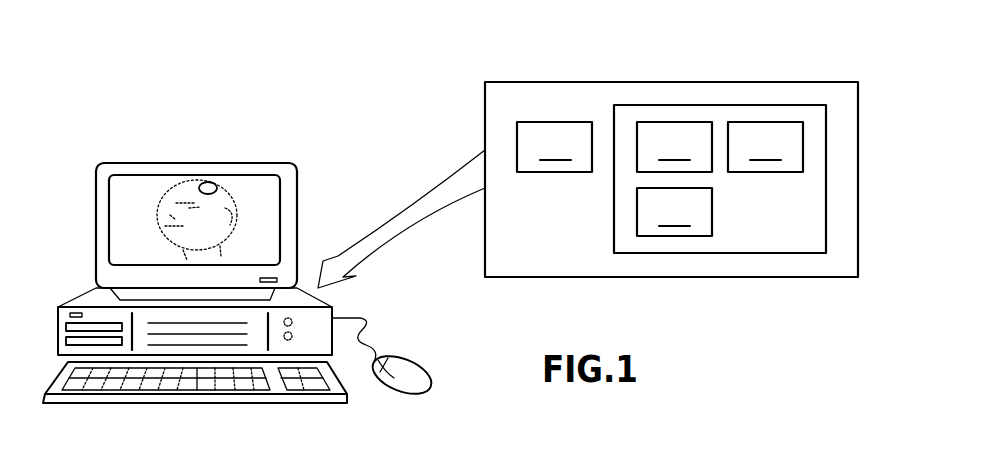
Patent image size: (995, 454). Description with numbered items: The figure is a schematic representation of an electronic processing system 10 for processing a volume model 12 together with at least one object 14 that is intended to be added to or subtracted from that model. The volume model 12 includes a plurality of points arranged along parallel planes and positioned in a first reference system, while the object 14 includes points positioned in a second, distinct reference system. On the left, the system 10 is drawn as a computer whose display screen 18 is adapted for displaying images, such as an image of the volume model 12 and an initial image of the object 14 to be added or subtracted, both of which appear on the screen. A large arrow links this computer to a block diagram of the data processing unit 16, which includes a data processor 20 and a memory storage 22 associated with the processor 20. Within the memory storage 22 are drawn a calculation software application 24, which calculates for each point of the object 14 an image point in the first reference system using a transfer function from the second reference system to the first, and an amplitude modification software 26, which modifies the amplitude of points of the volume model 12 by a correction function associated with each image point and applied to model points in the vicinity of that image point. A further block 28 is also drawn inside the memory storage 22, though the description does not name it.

The electronic processing system 10 is at (449, 211).
The volume model 12 is at (180, 190).
The object 14 is at (209, 182).
The data processing unit 16 is at (607, 40).
The display screen 18 is at (177, 210).
The data processor 20 is at (554, 147).
The memory storage 22 is at (718, 254).
The calculation software application 24 is at (674, 147).
The amplitude modification software 26 is at (765, 147).
The memory module 28 is at (674, 212).